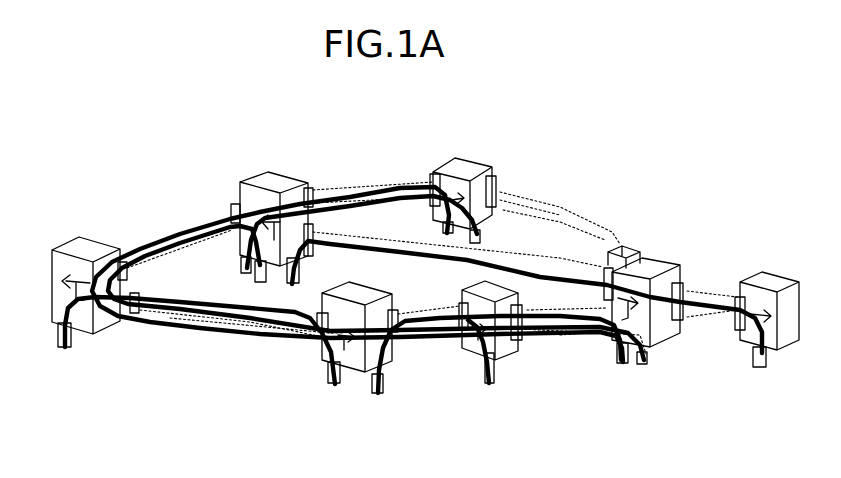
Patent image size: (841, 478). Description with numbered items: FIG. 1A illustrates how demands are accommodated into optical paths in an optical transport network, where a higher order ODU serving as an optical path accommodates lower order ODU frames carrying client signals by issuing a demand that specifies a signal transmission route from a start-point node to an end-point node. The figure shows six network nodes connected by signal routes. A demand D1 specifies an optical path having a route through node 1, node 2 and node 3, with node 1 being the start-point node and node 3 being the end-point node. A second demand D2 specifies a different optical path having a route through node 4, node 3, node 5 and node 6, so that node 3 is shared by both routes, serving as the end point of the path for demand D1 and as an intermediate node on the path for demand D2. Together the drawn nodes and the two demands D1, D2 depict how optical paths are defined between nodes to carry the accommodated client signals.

The node 1 is at (353, 382).
The node 2 is at (507, 360).
The node 3 is at (665, 348).
The node 4 is at (773, 273).
The node 5 is at (277, 170).
The node 6 is at (463, 155).
The demand D1 is at (570, 340).
The demand D2 is at (535, 272).